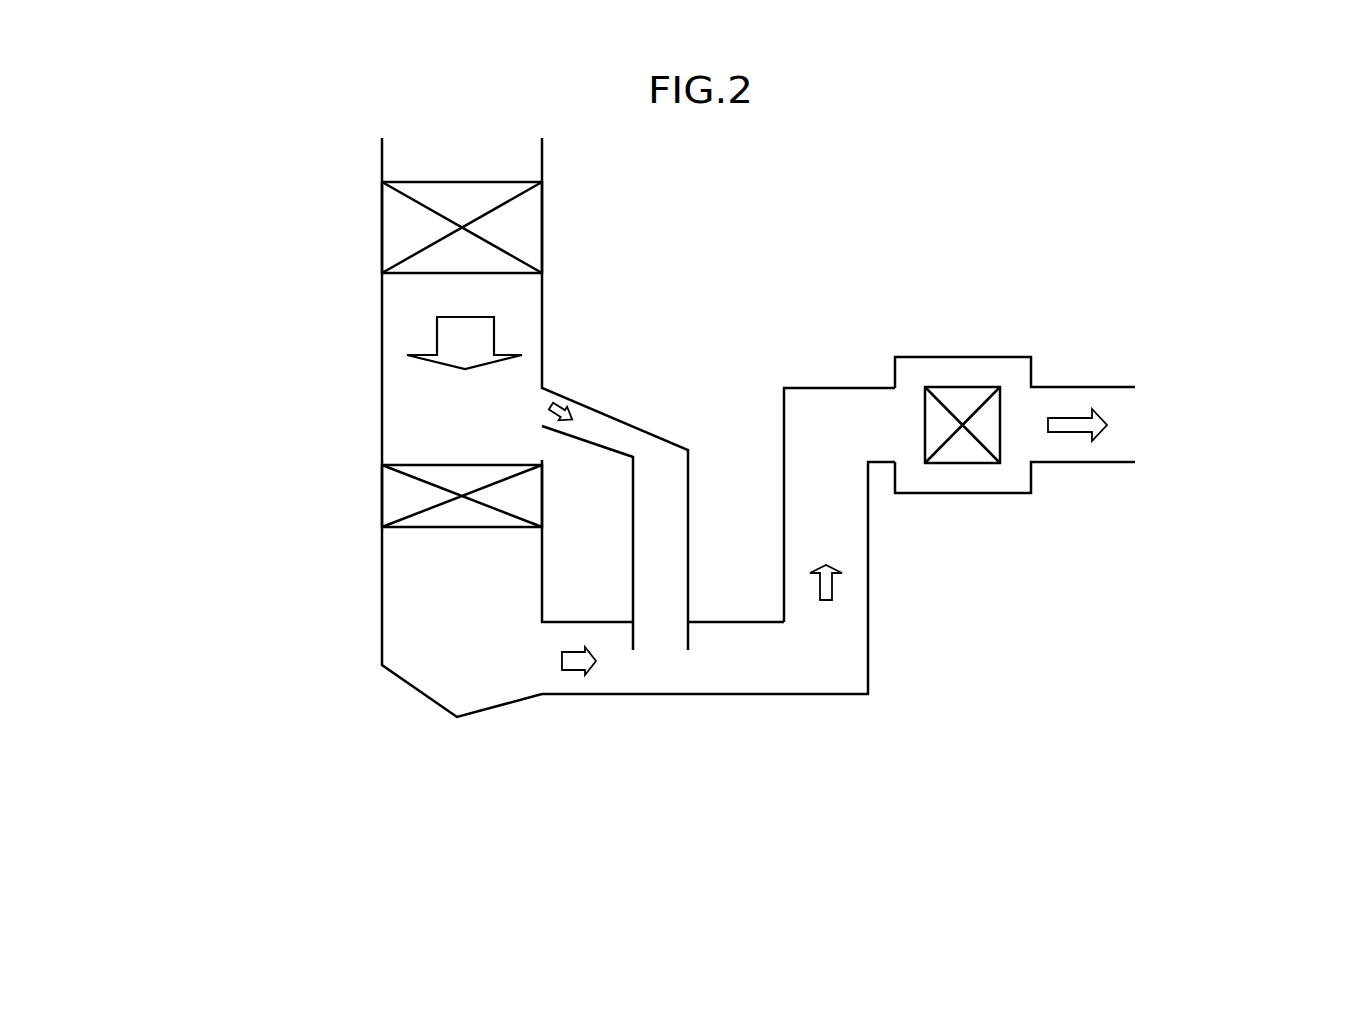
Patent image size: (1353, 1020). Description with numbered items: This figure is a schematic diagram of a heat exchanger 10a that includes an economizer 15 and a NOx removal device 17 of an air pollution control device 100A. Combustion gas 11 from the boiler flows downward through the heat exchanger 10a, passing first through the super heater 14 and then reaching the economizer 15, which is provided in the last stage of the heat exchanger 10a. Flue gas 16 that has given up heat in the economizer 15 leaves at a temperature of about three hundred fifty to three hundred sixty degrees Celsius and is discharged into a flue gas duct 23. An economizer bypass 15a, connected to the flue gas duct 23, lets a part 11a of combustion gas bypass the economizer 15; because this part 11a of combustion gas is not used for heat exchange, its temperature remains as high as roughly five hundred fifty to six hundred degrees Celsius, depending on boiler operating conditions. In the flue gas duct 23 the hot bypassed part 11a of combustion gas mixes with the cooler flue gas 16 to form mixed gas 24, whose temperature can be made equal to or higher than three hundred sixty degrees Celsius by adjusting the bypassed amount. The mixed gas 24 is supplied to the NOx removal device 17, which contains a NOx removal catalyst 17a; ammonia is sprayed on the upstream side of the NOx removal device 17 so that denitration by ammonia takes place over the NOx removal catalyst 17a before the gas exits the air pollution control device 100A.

The heat exchanger 10a is at (170, 207).
The super heater 14 is at (382, 222).
The combustion gas 11 is at (437, 333).
The economizer 15 is at (382, 486).
The part of combustion gas 11a is at (564, 400).
The flue gas 16 is at (575, 672).
The economizer bypass 15a is at (688, 570).
The flue gas duct 23 is at (683, 696).
The mixed gas 24 is at (832, 587).
The NOx removal device 17 is at (987, 357).
The NOx removal catalyst 17a is at (963, 453).
The air pollution control device 100A is at (1095, 391).